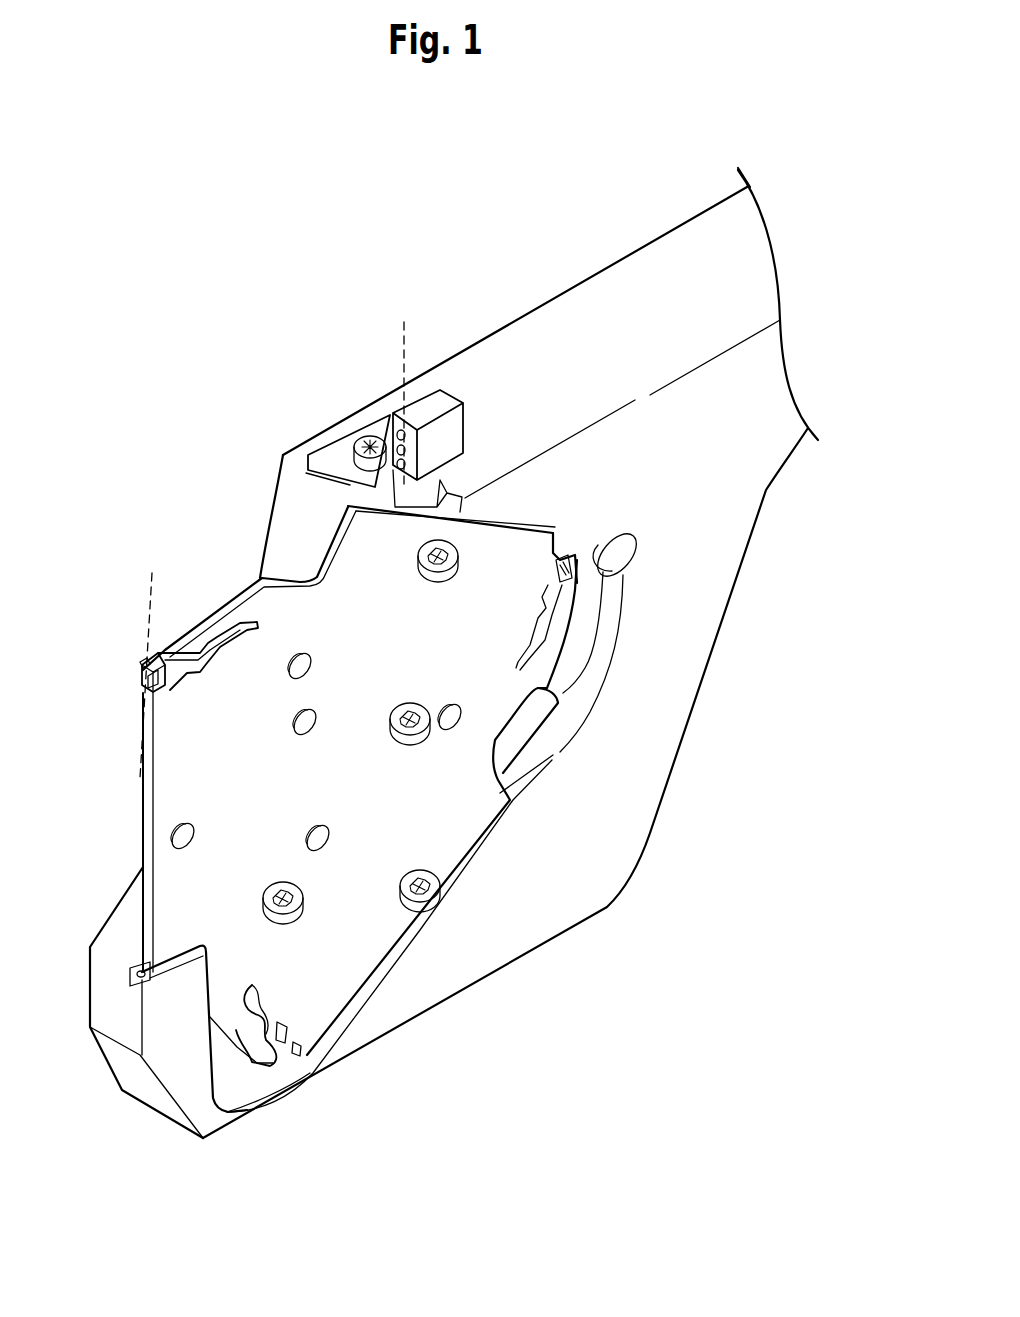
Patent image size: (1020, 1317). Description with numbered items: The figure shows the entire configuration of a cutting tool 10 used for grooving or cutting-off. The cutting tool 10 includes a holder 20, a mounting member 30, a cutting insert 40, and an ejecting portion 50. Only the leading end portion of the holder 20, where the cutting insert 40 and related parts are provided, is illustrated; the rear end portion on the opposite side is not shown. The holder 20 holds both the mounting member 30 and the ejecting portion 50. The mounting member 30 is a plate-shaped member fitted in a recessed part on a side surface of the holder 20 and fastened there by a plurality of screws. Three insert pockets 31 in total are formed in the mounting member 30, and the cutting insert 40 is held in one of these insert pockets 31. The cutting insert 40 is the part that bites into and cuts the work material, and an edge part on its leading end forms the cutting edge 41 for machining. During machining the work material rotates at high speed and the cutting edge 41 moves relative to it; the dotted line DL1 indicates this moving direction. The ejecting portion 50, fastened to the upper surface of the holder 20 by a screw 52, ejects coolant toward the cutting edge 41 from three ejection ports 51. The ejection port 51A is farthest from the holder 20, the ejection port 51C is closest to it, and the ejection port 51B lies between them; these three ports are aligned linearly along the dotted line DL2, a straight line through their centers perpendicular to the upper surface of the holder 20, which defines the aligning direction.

The cutting tool 10 is at (585, 221).
The holder 20 is at (497, 340).
The mounting member 30 is at (163, 807).
The insert pocket 31 is at (180, 680).
The cutting insert 40 is at (141, 696).
The cutting edge 41 is at (140, 666).
The ejecting portion 50 is at (433, 403).
The ejection port 51 is at (321, 379).
The ejection port 51A is at (398, 432).
The ejection port 51B is at (398, 448).
The ejection port 51C is at (398, 462).
The screw 52 is at (358, 442).
The dotted line DL1 is at (138, 625).
The dotted line DL2 is at (402, 335).